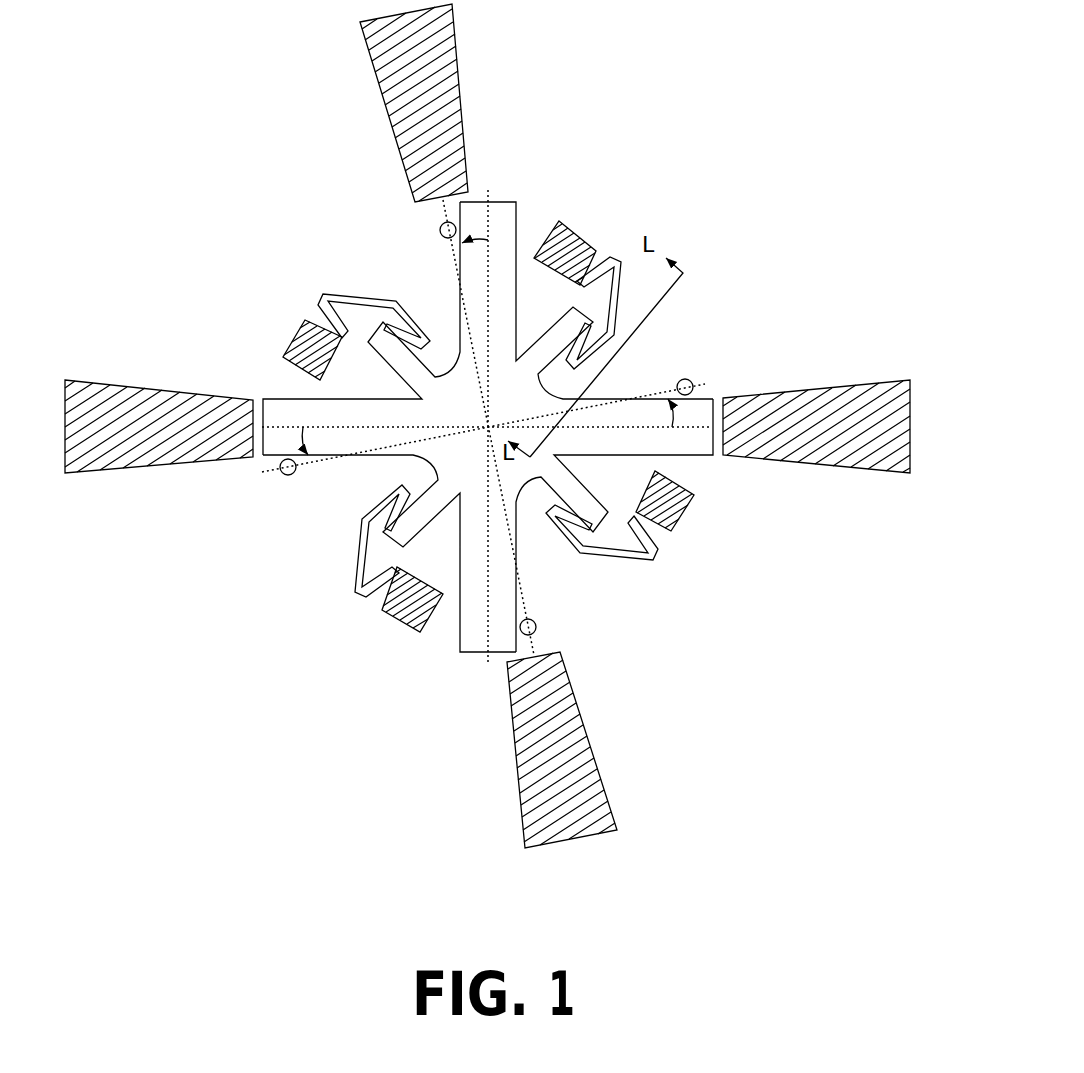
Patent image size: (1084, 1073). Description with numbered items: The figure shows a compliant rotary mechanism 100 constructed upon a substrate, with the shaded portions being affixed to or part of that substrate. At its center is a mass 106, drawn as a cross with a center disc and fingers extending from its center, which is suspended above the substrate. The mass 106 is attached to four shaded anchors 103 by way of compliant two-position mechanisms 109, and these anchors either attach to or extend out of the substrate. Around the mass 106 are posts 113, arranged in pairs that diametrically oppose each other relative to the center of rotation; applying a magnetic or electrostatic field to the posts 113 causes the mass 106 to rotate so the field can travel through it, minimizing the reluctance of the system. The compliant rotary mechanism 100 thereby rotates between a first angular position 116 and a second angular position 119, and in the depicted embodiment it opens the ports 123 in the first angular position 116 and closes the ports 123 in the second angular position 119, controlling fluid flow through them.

The compliant rotary mechanism 100 is at (731, 104).
The anchors 103 is at (298, 328).
The mass 106 is at (518, 222).
The compliant two-position mechanisms 109 is at (367, 281).
The posts 113 is at (461, 83).
The first angular position 116 is at (514, 607).
The second angular position 119 is at (322, 457).
The ports 123 is at (440, 232).